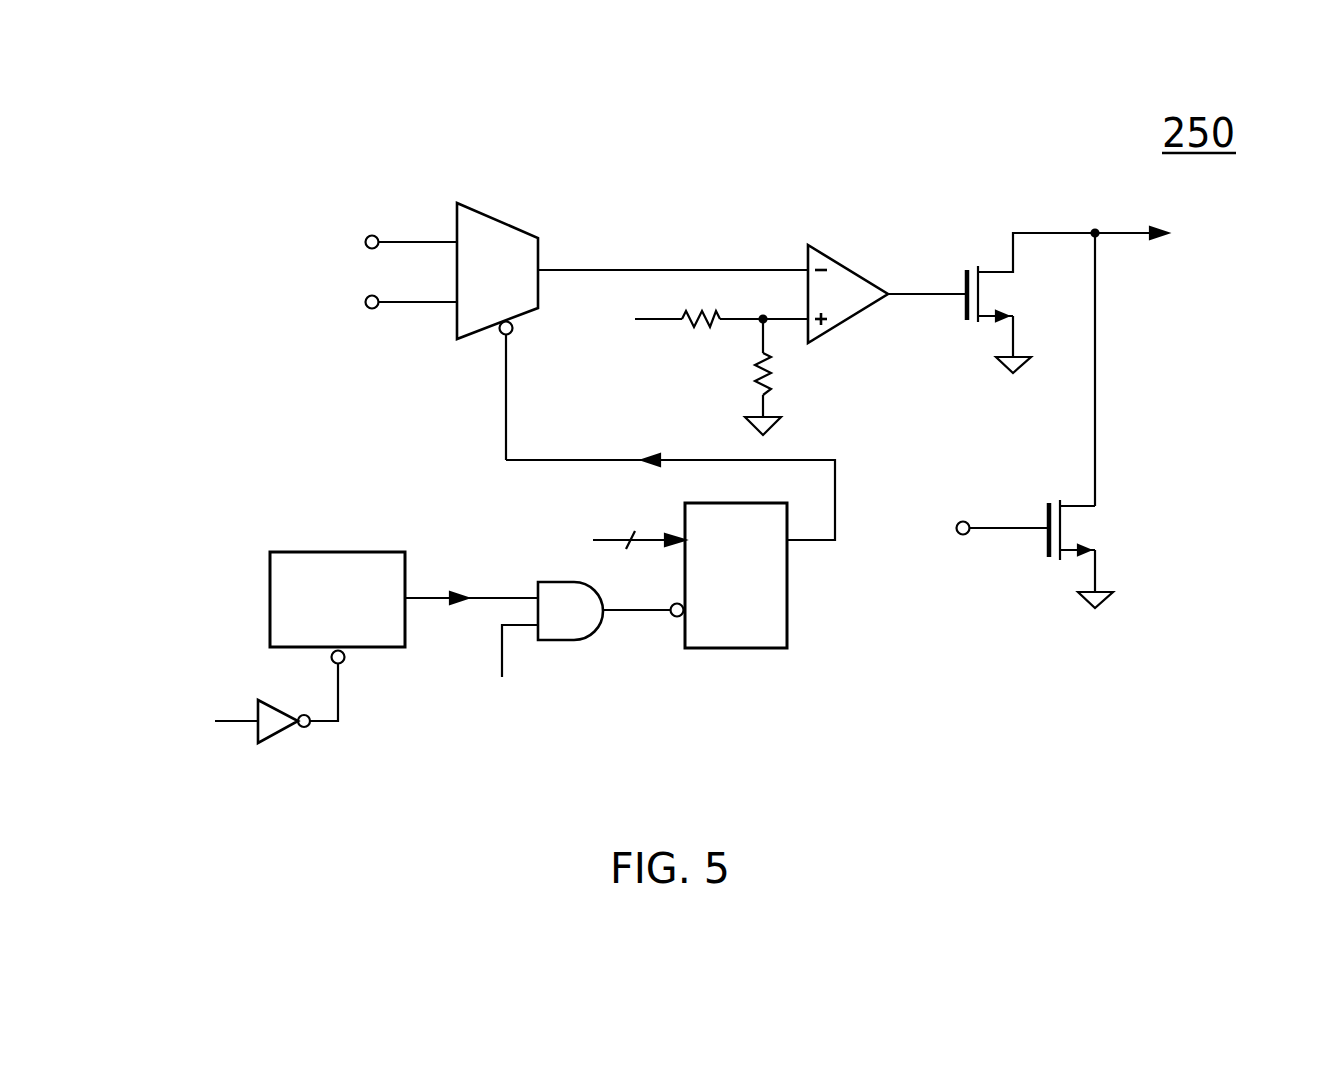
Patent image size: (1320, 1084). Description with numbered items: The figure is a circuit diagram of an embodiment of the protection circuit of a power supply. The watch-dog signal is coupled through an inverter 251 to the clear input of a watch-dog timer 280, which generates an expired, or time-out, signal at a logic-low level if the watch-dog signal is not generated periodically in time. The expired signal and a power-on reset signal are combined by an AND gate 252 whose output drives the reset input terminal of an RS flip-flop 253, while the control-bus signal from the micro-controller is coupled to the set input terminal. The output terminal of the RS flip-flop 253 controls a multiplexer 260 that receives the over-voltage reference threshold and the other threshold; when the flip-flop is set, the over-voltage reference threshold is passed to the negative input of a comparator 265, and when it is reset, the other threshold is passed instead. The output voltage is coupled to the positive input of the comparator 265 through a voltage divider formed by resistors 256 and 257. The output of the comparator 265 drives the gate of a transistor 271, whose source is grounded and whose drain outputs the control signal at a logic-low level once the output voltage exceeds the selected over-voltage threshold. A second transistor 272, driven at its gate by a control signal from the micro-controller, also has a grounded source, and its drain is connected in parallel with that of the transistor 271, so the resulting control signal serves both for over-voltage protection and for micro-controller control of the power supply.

The multiplexer 260 is at (563, 321).
The comparator 265 is at (887, 286).
The resistor 256 is at (700, 338).
The resistor 257 is at (787, 377).
The transistor 271 is at (1086, 297).
The transistor 272 is at (1020, 420).
The RS flip-flop 253 is at (670, 551).
The AND gate 252 is at (537, 636).
The watch-dog timer 280 is at (337, 619).
The inverter 251 is at (244, 737).